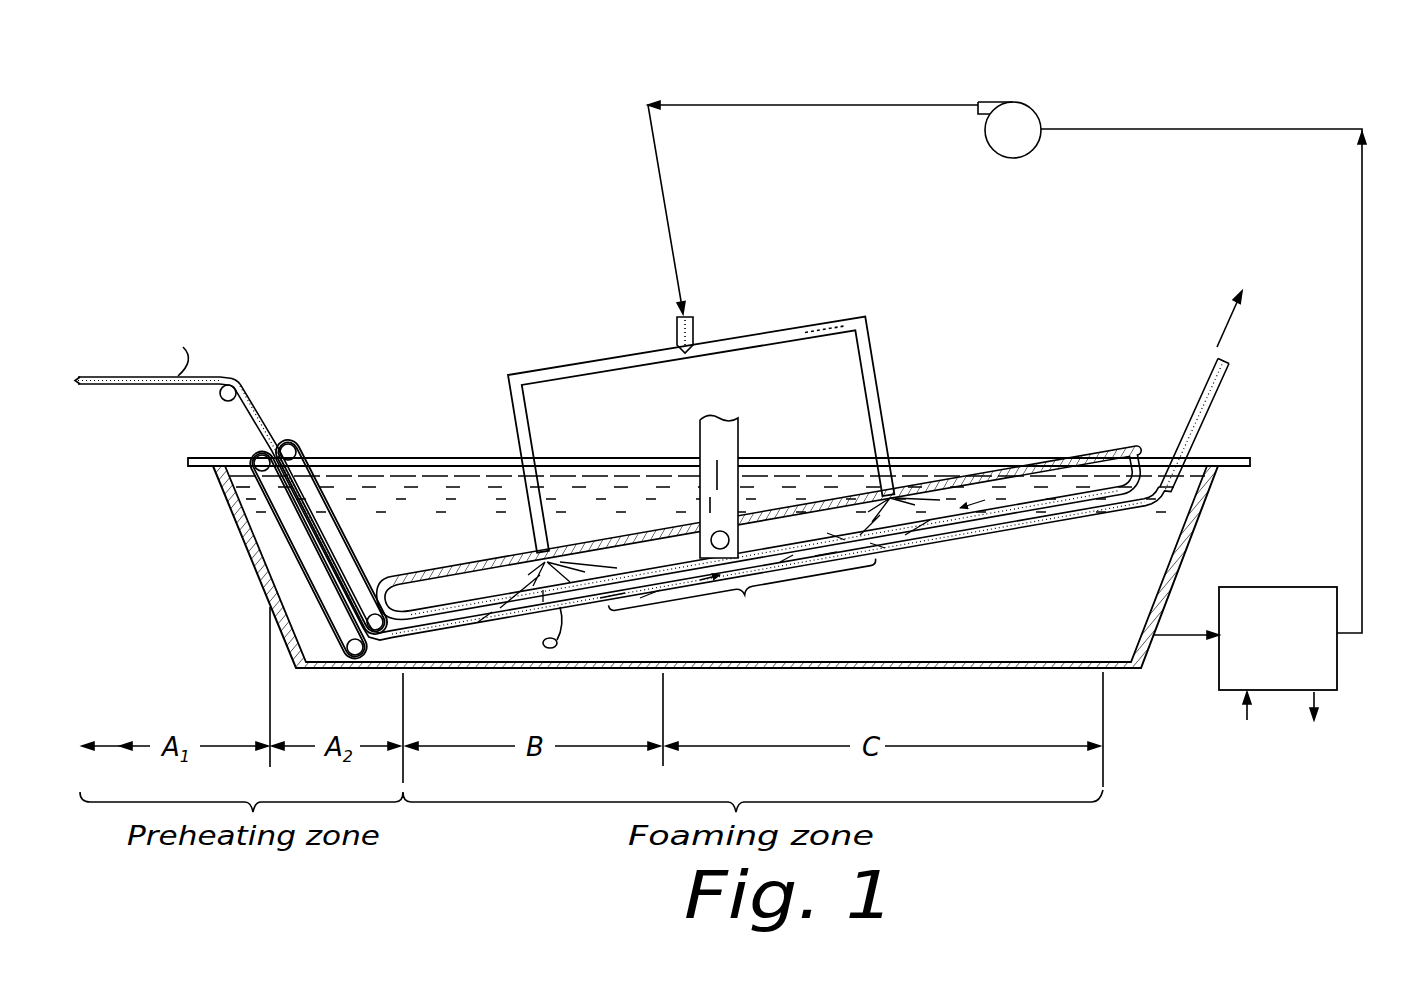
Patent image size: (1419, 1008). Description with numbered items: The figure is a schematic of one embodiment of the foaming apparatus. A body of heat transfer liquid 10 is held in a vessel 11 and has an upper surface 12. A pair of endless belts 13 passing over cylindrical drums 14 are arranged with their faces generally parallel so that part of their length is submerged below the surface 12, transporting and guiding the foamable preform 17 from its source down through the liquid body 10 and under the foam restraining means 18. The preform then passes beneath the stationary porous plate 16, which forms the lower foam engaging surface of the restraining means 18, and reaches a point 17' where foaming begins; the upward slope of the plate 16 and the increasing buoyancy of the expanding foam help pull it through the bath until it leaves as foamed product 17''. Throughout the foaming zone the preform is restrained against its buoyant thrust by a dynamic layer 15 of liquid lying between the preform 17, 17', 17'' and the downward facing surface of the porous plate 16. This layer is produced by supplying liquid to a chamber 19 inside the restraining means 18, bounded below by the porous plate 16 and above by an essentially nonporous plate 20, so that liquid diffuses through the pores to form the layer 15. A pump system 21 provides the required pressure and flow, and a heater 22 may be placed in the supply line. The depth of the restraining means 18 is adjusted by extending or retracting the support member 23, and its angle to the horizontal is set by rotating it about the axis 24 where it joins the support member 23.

The heat transfer liquid 10 is at (1045, 597).
The vessel 11 is at (633, 666).
The upper surface 12 is at (385, 473).
The endless belts 13 is at (349, 548).
The cylindrical drums 14 is at (281, 444).
The dynamic layer 15 is at (567, 597).
The porous plate 16 is at (1090, 487).
The foamable preform 17 is at (682, 454).
The foaming preform 17' is at (743, 603).
The foamed product 17'' is at (1158, 461).
The foam restraining means 18 is at (627, 510).
The chamber 19 is at (930, 490).
The nonporous plate 20 is at (822, 503).
The pump system 21 is at (1000, 140).
The heater 22 is at (1324, 672).
The support member 23 is at (732, 440).
The axis 24 is at (725, 532).